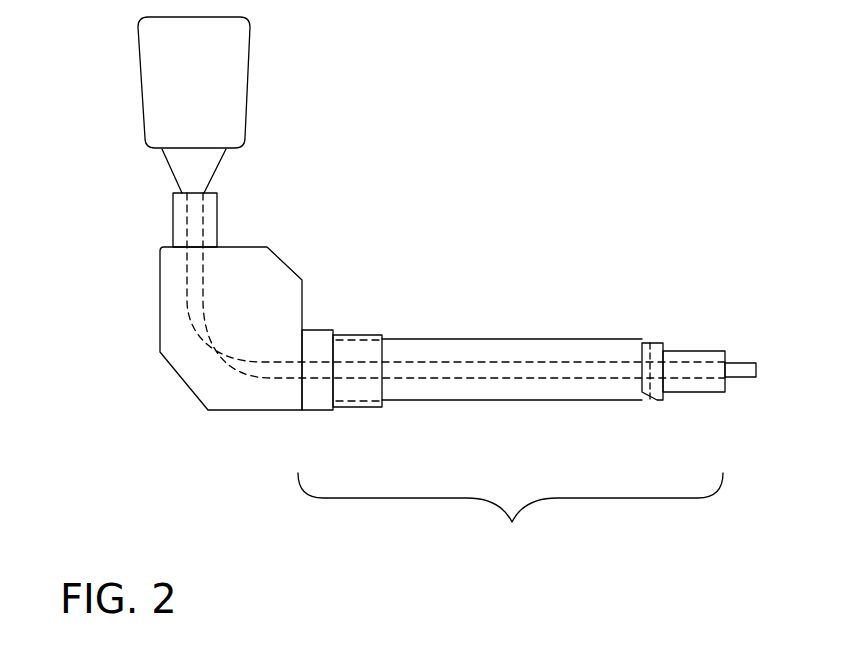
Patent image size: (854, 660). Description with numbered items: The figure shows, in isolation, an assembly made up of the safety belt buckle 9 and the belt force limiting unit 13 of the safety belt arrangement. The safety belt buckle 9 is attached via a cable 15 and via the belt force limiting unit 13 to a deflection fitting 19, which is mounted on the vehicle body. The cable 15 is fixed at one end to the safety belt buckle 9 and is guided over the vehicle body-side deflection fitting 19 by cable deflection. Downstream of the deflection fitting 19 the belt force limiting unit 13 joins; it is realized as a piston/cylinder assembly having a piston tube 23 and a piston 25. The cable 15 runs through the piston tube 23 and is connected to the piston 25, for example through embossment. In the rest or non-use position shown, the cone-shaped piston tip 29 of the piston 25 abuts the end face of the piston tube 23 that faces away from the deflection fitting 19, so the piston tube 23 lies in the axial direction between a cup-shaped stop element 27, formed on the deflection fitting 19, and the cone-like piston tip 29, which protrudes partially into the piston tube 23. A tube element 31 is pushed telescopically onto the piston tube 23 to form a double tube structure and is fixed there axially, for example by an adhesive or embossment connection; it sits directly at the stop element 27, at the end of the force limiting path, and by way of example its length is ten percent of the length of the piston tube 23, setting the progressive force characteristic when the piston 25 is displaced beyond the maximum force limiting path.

The safety belt buckle 9 is at (246, 83).
The belt force limiting unit 13 is at (510, 513).
The cable 15 is at (211, 354).
The deflection fitting 19 is at (287, 266).
The piston tube 23 is at (482, 400).
The piston 25 is at (657, 400).
The cup-shaped stop element 27 is at (317, 410).
The cone-shaped piston tip 29 is at (643, 344).
The tube element 31 is at (355, 405).